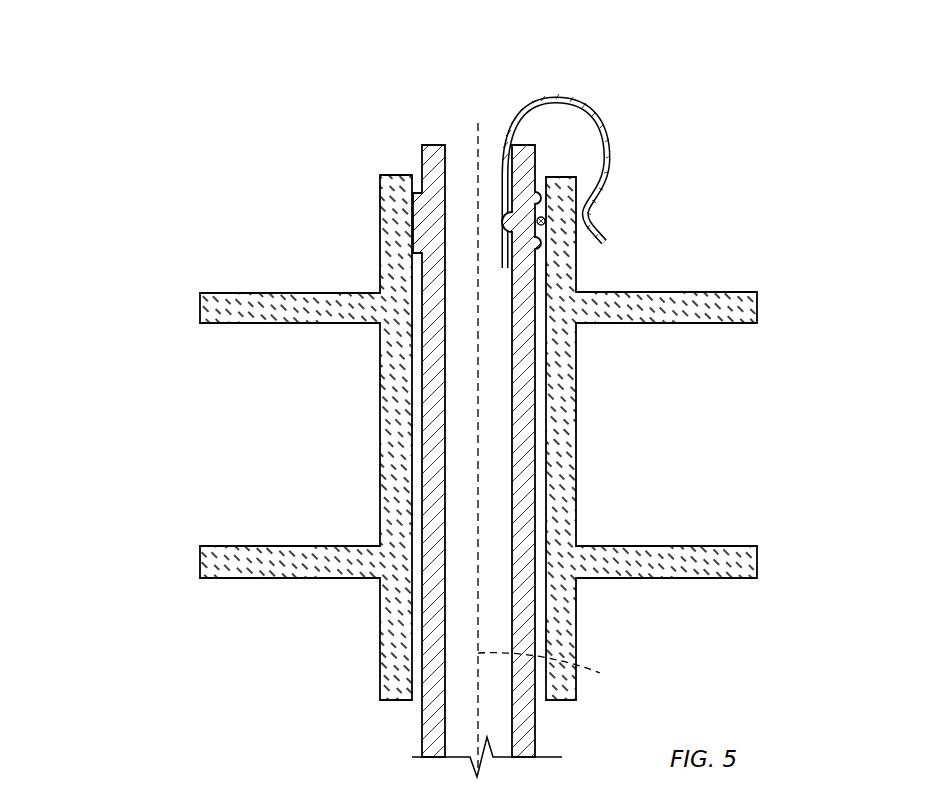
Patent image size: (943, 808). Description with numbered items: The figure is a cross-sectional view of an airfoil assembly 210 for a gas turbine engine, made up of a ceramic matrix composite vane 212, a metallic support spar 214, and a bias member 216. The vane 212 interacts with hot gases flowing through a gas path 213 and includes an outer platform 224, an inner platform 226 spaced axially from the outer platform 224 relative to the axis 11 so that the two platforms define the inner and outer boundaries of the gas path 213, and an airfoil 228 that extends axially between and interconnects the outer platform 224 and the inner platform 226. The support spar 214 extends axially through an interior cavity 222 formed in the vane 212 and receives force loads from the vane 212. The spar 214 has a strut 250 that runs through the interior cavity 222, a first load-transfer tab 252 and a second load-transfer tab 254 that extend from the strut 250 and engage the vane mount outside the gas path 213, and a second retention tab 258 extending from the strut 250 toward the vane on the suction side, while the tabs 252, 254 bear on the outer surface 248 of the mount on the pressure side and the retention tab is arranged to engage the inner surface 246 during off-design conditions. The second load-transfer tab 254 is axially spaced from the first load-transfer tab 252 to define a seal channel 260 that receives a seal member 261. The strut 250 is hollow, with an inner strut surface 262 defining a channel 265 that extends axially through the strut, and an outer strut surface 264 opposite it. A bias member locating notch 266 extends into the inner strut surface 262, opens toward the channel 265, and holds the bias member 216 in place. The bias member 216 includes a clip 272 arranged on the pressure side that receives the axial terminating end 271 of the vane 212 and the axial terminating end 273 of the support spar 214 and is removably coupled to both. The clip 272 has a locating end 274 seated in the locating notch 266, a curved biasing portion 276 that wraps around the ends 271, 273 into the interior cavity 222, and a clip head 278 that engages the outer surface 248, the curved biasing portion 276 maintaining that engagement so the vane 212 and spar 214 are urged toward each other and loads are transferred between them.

The airfoil assembly 210 is at (130, 157).
The ceramic matrix composite vane 212 is at (528, 437).
The gas path 213 is at (736, 449).
The metallic support spar 214 is at (364, 399).
The bias member 216 is at (619, 140).
The interior cavity 222 is at (417, 697).
The outer platform 224 is at (762, 292).
The inner platform 226 is at (760, 563).
The airfoil 228 is at (578, 415).
The inner surface 246 is at (400, 348).
The outer surface 248 is at (380, 331).
The strut 250 is at (410, 405).
The first load-transfer tab 252 is at (583, 409).
The second load-transfer tab 254 is at (565, 247).
The second retention tab 258 is at (410, 236).
The seal channel 260 is at (560, 240).
The seal member 261 is at (550, 210).
The inner strut surface 262 is at (440, 612).
The outer strut surface 264 is at (418, 657).
The channel 265 is at (493, 670).
The bias member locating notch 266 is at (520, 252).
The axial terminating end 271 is at (570, 163).
The clip 272 is at (617, 140).
The axial terminating end 273 is at (528, 135).
The locating end 274 is at (497, 212).
The curved biasing portion 276 is at (571, 98).
The clip head 278 is at (595, 227).
The axis 11 is at (555, 670).